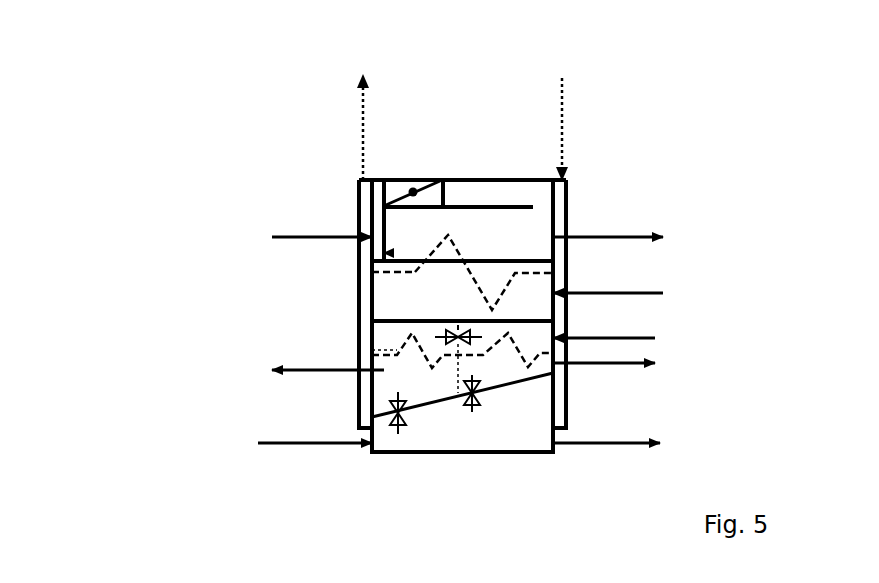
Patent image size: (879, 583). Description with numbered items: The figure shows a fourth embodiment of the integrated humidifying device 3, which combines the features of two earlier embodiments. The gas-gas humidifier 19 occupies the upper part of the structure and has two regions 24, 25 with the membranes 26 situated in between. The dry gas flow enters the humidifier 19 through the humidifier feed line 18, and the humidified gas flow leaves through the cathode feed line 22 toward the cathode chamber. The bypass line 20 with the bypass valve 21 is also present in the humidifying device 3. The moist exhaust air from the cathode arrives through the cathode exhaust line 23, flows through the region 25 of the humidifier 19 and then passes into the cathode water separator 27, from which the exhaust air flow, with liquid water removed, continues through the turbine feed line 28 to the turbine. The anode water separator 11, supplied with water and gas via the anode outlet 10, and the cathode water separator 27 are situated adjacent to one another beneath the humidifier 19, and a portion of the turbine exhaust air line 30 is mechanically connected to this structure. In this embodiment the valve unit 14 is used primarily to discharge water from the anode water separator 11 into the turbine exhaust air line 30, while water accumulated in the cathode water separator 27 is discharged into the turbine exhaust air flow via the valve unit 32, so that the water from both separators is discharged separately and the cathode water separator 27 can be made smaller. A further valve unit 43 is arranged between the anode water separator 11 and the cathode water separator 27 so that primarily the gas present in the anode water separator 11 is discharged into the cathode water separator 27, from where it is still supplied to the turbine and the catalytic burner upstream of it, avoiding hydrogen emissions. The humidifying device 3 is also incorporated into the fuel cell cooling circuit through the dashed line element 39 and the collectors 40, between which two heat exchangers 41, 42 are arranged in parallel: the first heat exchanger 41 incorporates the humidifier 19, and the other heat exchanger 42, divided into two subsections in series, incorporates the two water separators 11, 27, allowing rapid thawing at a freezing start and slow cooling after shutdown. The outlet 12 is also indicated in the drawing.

The humidifying device 3 is at (462, 228).
The anode outlet 10 is at (637, 337).
The anode water separator 11 is at (495, 378).
The outlet flow 12 is at (655, 363).
The valve unit 14 is at (478, 410).
The humidifier feed line 18 is at (305, 235).
The gas-gas humidifier 19 is at (372, 257).
The bypass line 20 is at (470, 178).
The bypass valve 21 is at (408, 180).
The cathode feed line 22 is at (640, 234).
The cathode exhaust line 23 is at (663, 293).
The region of the humidifier 24 is at (524, 234).
The region of the humidifier 25 is at (372, 299).
The membranes 26 is at (372, 278).
The cathode water separator 27 is at (393, 385).
The turbine feed line 28 is at (305, 372).
The turbine exhaust air line 30 is at (374, 448).
The valve unit 32 is at (405, 437).
The line element 39 is at (361, 148).
The collectors 40 is at (357, 205).
The first heat exchanger 41 is at (384, 250).
The heat exchanger 42 is at (372, 351).
The further valve unit 43 is at (465, 345).